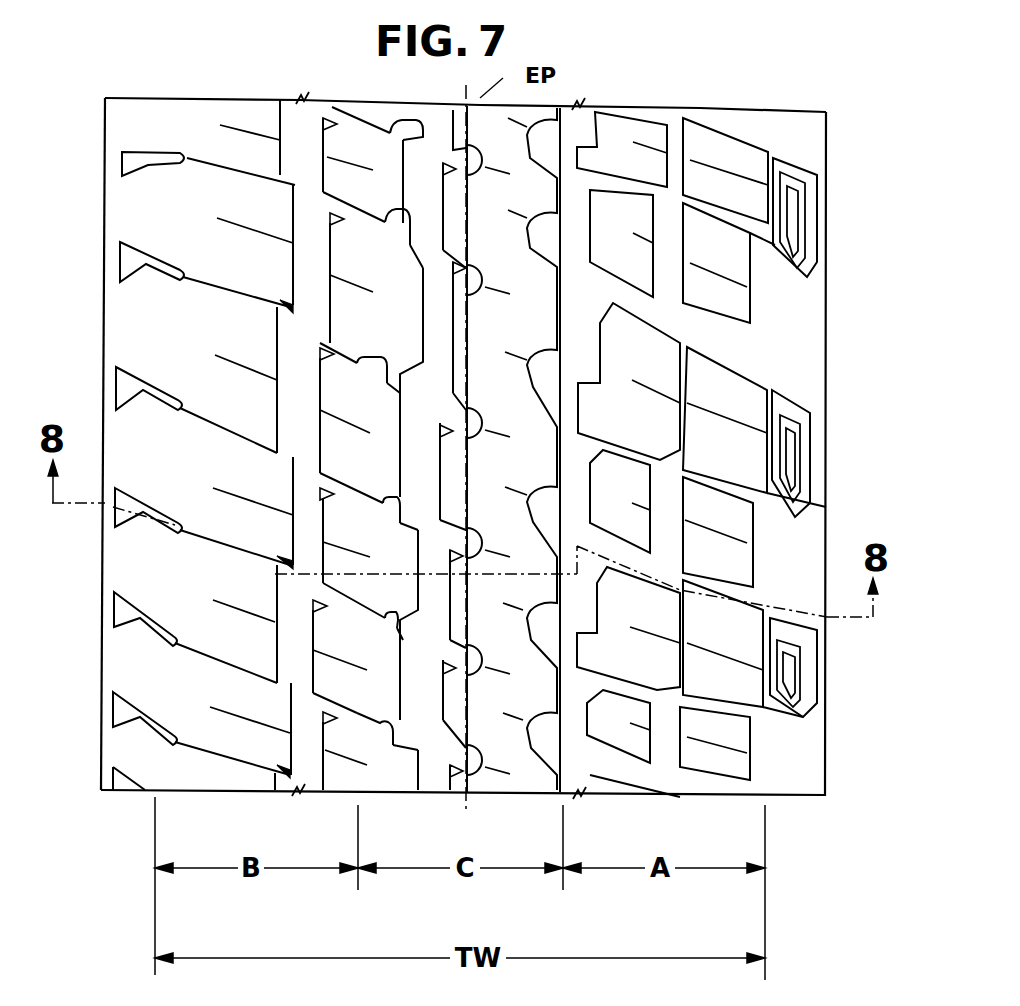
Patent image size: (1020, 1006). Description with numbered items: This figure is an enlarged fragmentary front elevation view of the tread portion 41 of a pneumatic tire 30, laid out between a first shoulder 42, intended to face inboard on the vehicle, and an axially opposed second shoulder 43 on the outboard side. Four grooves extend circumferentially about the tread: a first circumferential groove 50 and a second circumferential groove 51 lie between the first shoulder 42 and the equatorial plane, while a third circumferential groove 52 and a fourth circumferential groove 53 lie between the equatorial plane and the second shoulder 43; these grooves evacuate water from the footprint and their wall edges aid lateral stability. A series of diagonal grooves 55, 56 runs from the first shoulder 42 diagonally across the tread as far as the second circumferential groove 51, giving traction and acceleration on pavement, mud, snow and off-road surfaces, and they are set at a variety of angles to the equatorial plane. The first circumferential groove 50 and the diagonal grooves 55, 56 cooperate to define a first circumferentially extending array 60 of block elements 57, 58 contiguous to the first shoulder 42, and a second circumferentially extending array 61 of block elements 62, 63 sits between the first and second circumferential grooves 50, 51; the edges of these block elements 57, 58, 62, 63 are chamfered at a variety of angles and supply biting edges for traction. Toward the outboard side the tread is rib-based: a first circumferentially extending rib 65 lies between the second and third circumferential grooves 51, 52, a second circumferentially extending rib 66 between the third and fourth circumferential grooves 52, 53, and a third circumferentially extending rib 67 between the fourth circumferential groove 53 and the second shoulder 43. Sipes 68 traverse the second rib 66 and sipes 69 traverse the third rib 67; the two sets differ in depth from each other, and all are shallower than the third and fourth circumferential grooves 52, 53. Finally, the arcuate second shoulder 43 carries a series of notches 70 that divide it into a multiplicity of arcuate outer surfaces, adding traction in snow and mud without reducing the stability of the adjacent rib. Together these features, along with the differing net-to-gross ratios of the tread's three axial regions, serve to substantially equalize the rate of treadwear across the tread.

The pneumatic tire 30 is at (797, 83).
The tread portion 41 is at (250, 100).
The first shoulder 42 is at (773, 167).
The second shoulder 43 is at (172, 118).
The first circumferential groove 50 is at (657, 107).
The second circumferential groove 51 is at (568, 107).
The third circumferential groove 52 is at (437, 118).
The fourth circumferential groove 53 is at (308, 108).
The diagonal groove 55 is at (730, 218).
The diagonal groove 56 is at (757, 365).
The block element 57 is at (706, 204).
The block element 58 is at (698, 251).
The first circumferentially extending array 60 is at (724, 100).
The second circumferentially extending array 61 is at (623, 100).
The block element 62 is at (604, 171).
The block element 63 is at (601, 226).
The first circumferentially extending rib 65 is at (481, 401).
The second circumferentially extending rib 66 is at (364, 329).
The third circumferentially extending rib 67 is at (278, 226).
The sipe 68 is at (372, 369).
The sipe 69 is at (255, 305).
The notch 70 is at (147, 256).